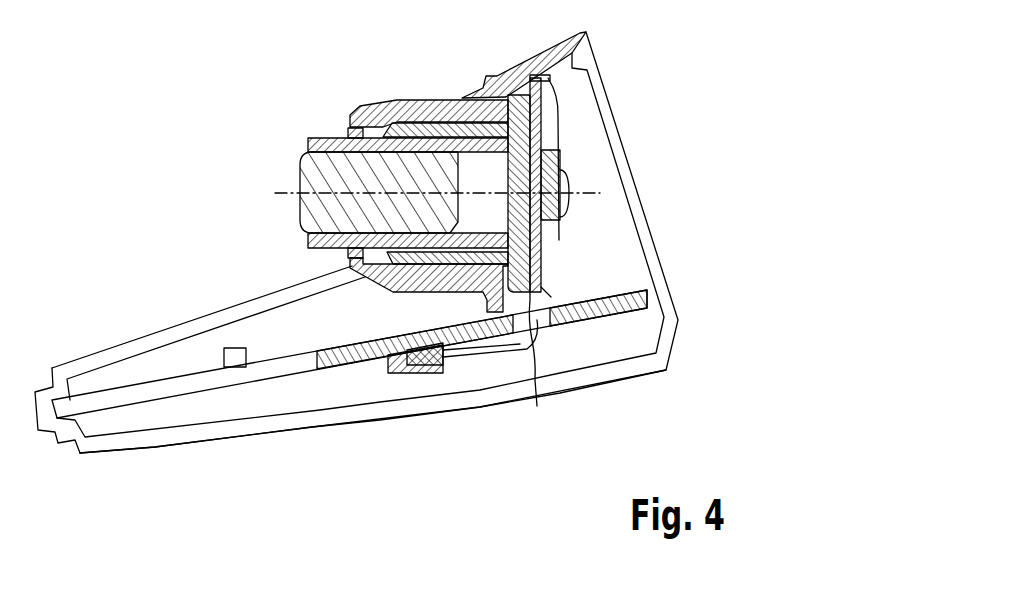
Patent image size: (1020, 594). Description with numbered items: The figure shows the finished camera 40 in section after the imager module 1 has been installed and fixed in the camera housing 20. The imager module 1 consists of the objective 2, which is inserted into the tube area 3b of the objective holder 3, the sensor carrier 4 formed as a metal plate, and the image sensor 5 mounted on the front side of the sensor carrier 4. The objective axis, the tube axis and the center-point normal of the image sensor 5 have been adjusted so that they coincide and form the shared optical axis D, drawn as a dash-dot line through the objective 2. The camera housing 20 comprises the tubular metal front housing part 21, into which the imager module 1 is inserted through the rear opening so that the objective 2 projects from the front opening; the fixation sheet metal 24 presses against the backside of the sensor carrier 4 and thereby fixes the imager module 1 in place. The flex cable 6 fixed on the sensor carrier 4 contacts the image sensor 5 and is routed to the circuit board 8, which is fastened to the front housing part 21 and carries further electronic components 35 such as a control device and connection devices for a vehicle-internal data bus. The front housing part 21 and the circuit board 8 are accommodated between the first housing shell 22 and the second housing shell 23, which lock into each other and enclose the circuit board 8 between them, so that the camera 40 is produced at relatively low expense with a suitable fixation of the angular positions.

The camera 40 is at (166, 72).
The imager module 1 is at (327, 124).
The objective 2 is at (310, 143).
The objective holder 3 is at (463, 115).
The tube area 3b is at (432, 122).
The sensor carrier 4 is at (546, 77).
The image sensor 5 is at (545, 201).
The flex cable 6 is at (537, 399).
The circuit board 8 is at (167, 396).
The camera housing 20 is at (78, 449).
The front housing part 21 is at (390, 99).
The first housing shell 22 is at (140, 343).
The second housing shell 23 is at (312, 428).
The fixation sheet metal 24 is at (558, 131).
The electronic components 35 is at (234, 347).
The optical axis D is at (283, 191).